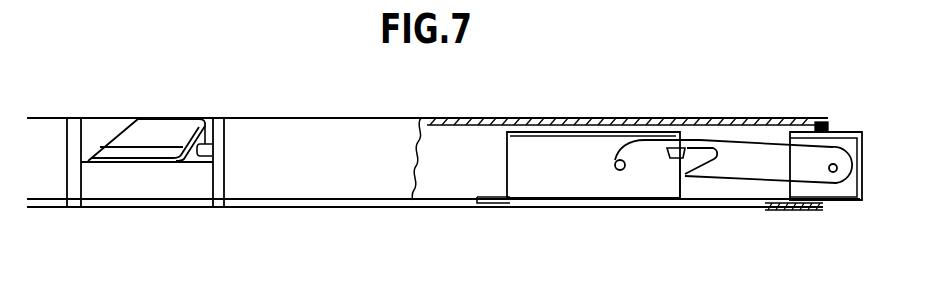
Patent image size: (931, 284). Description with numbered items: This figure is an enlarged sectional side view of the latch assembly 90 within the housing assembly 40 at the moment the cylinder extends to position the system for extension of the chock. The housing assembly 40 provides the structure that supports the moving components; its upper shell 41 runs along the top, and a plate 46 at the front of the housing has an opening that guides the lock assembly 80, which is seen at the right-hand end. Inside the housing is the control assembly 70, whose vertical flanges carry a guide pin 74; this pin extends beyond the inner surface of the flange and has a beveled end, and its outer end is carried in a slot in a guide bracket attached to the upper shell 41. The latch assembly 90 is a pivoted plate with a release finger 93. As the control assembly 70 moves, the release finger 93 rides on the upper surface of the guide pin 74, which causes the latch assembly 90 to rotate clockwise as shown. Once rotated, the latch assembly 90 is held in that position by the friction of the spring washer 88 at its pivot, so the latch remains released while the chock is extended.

The housing assembly 40 is at (307, 119).
The upper shell 41 is at (433, 121).
The plate 46 is at (830, 123).
The control assembly 70 is at (505, 158).
The guide pin 74 is at (620, 171).
The lock assembly 80 is at (892, 120).
The spring washer 88 is at (836, 172).
The latch assembly 90 is at (740, 182).
The release finger 93 is at (612, 151).